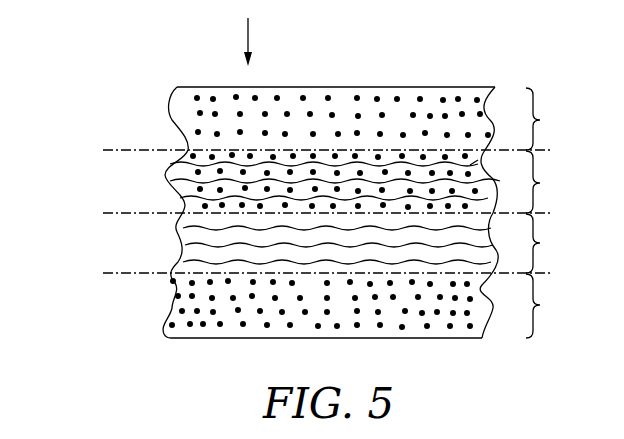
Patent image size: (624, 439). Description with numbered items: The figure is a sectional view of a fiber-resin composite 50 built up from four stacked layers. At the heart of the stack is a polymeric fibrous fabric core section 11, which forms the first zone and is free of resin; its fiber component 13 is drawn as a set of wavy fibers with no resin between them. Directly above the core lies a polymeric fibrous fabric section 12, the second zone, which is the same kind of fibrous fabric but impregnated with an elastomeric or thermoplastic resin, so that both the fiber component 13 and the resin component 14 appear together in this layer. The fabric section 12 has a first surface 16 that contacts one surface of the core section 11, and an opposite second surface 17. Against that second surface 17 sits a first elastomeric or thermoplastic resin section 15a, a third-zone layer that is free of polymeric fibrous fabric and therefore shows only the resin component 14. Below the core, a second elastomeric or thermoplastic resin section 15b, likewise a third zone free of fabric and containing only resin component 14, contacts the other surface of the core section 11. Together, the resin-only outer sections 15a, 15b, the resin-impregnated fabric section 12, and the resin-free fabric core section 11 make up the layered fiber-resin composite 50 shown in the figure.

The fiber-resin composite 50 is at (560, 35).
The resin component 14 is at (193, 98).
The fiber component 13 is at (170, 163).
The first surface 16 is at (108, 214).
The second surface 17 is at (480, 160).
The first elastomeric or thermoplastic resin section 15a is at (551, 119).
The polymeric fibrous fabric section 12 is at (546, 182).
The polymeric fibrous fabric core section 11 is at (543, 243).
The second elastomeric or thermoplastic resin section 15b is at (551, 306).